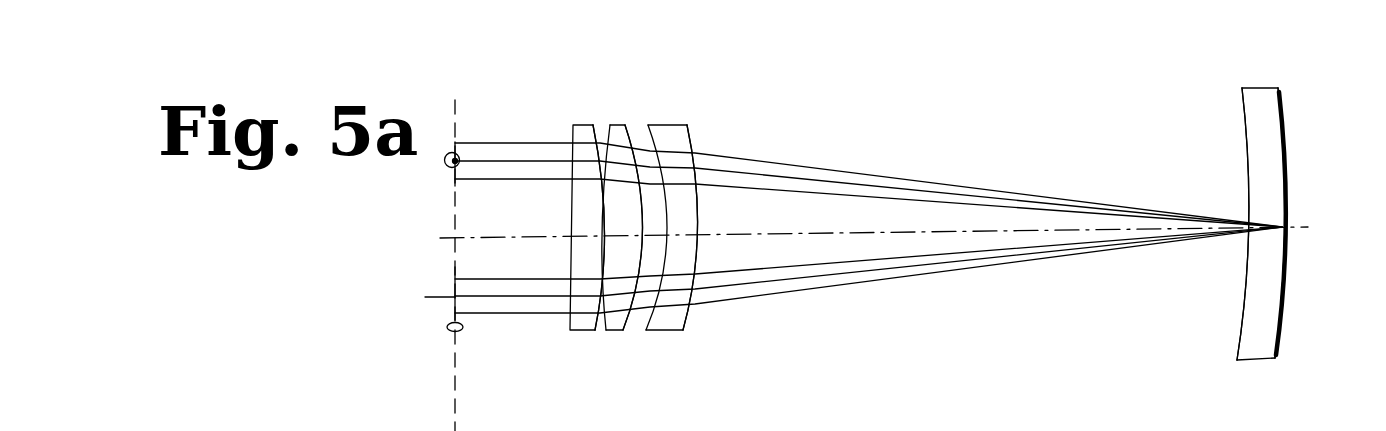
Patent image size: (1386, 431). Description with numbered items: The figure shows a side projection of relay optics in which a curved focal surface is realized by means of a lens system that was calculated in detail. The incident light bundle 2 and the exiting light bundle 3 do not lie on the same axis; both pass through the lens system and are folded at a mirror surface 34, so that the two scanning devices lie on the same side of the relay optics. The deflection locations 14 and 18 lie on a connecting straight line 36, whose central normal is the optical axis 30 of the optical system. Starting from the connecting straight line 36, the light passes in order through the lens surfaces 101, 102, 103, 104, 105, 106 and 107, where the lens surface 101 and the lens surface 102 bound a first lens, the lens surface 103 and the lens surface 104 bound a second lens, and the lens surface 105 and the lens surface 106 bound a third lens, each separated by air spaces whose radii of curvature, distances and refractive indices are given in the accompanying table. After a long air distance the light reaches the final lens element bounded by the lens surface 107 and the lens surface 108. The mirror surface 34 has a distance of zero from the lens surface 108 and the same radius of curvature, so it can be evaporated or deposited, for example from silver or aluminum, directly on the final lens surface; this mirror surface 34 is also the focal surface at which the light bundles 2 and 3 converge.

The incident light bundle 2 is at (477, 148).
The exiting light bundle 3 is at (502, 312).
The deflection location 14 is at (446, 159).
The deflection location 18 is at (425, 298).
The optical axis 30 is at (1302, 222).
The mirror surface 34 is at (1283, 98).
The connecting straight line 36 is at (450, 215).
The lens surface 101 is at (570, 328).
The lens surface 102 is at (591, 333).
The lens surface 103 is at (610, 132).
The lens surface 104 is at (633, 125).
The lens surface 105 is at (645, 323).
The lens surface 106 is at (687, 323).
The lens surface 107 is at (1242, 117).
The lens surface 108 is at (1275, 90).